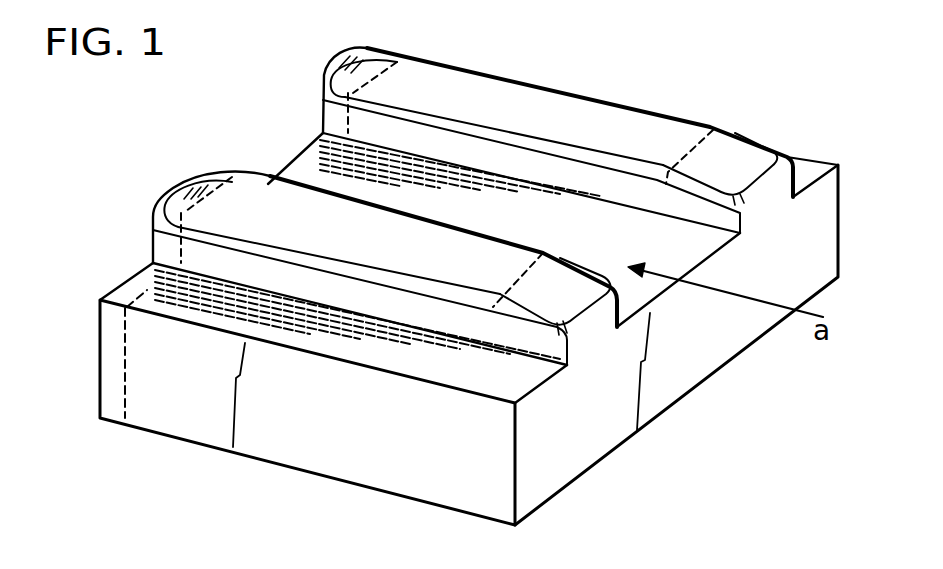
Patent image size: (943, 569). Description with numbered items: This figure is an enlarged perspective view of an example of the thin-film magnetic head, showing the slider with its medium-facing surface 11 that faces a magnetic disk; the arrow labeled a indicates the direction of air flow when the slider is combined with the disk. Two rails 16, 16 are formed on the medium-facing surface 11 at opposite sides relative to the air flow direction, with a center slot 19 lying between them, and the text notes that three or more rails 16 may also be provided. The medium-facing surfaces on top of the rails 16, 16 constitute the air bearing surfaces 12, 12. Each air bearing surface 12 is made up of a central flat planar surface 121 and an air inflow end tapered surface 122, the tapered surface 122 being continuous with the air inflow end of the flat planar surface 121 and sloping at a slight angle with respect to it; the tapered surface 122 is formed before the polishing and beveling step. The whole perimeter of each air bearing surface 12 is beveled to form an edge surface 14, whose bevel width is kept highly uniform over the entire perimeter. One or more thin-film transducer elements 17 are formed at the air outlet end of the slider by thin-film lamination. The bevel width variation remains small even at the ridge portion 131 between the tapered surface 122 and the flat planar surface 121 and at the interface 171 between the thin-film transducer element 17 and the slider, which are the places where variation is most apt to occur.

The medium-facing surface 11 is at (652, 69).
The air bearing surface 12 is at (473, 87).
The flat planar surface 121 is at (563, 103).
The air inflow end tapered surface 122 is at (740, 163).
The ridge portion 131 is at (693, 143).
The edge surface 14 is at (153, 213).
The rail 16 is at (392, 120).
The thin-film transducer element 17 is at (350, 67).
The center slot 19 is at (290, 150).
The interface 171 is at (125, 362).